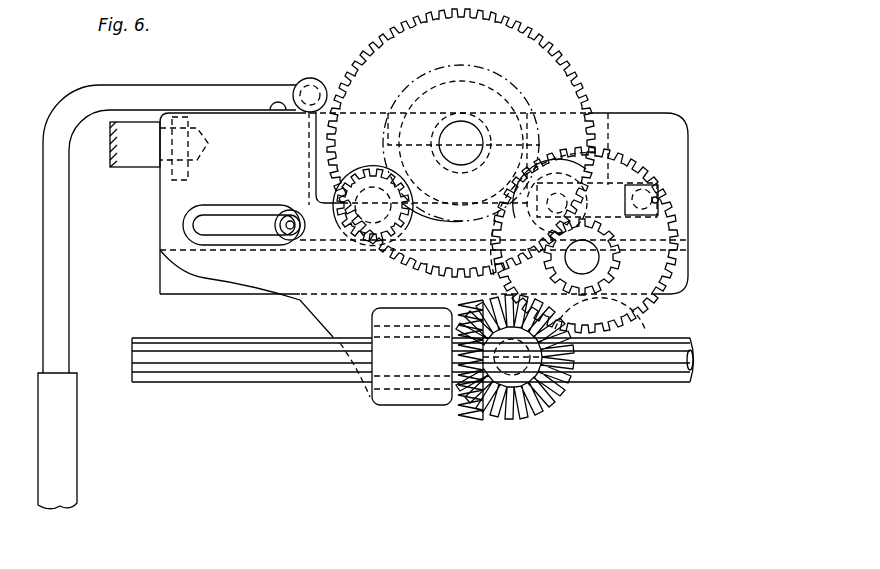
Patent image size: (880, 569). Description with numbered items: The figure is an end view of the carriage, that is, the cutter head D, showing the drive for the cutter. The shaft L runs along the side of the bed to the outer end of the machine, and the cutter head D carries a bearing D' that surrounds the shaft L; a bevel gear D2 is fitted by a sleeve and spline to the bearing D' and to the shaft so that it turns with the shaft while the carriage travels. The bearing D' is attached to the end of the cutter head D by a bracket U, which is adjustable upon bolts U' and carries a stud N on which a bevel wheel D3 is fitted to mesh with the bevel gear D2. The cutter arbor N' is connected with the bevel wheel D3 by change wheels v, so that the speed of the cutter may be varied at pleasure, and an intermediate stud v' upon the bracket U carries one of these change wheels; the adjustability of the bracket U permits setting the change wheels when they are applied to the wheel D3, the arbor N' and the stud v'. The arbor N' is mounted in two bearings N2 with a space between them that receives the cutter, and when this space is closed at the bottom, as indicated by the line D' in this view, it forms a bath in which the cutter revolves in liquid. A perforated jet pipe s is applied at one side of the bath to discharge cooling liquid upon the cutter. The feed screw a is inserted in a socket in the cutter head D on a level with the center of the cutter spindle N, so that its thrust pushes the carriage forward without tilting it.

The jet pipe s is at (243, 85).
The bracket U is at (424, 255).
The cutter head D is at (424, 209).
The screw a is at (137, 168).
The bolts U' is at (467, 193).
The stud N is at (461, 212).
The cutter arbor N' is at (461, 131).
The bearings N2 is at (424, 104).
The bearing D' is at (404, 303).
The shaft L is at (413, 372).
The bevel gear D2 is at (475, 370).
The bevel wheel D3 is at (529, 404).
The change wheels v is at (590, 229).
The intermediate stud v' is at (596, 257).